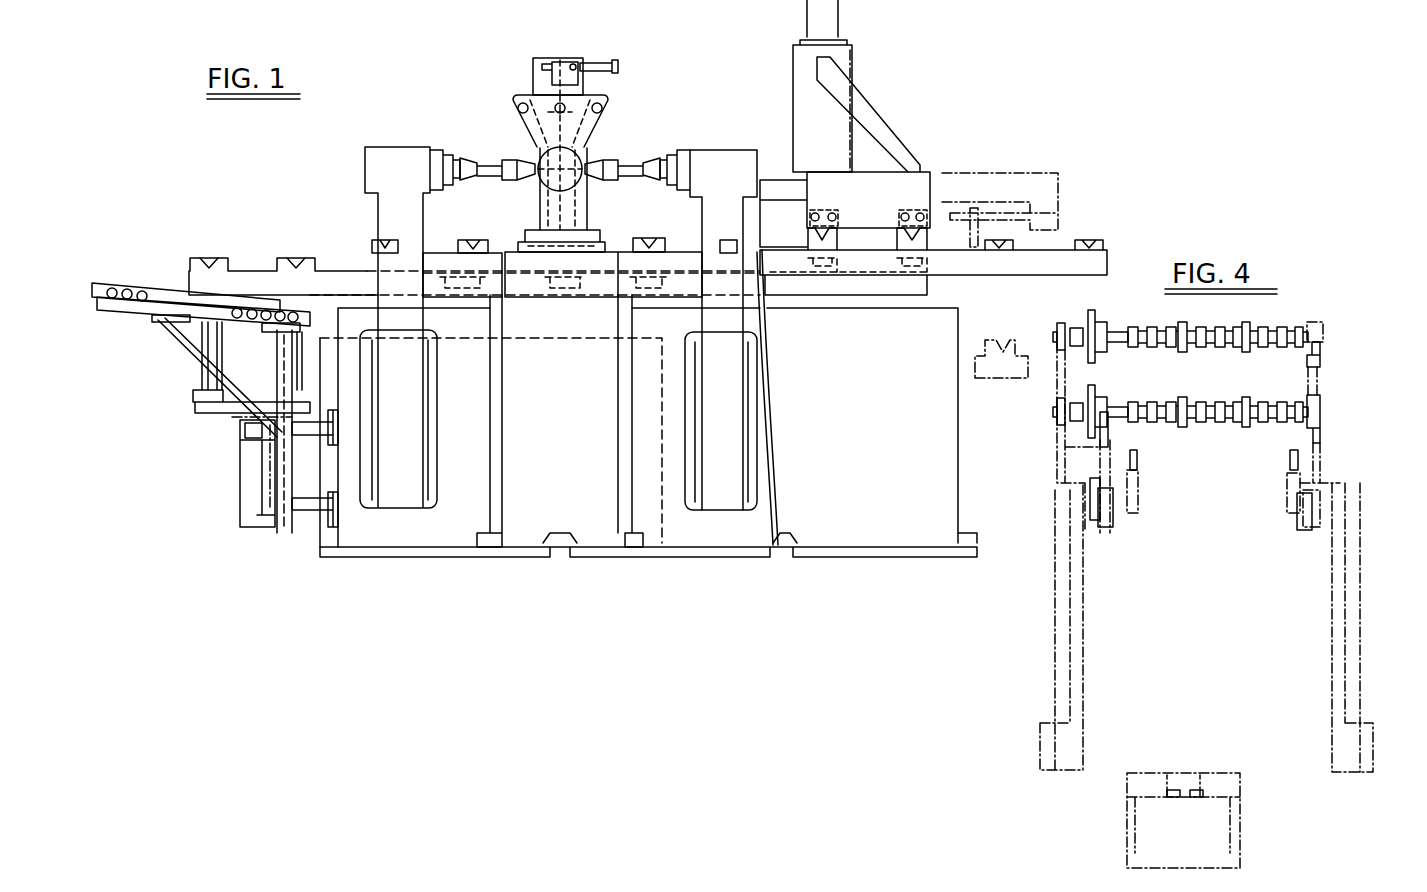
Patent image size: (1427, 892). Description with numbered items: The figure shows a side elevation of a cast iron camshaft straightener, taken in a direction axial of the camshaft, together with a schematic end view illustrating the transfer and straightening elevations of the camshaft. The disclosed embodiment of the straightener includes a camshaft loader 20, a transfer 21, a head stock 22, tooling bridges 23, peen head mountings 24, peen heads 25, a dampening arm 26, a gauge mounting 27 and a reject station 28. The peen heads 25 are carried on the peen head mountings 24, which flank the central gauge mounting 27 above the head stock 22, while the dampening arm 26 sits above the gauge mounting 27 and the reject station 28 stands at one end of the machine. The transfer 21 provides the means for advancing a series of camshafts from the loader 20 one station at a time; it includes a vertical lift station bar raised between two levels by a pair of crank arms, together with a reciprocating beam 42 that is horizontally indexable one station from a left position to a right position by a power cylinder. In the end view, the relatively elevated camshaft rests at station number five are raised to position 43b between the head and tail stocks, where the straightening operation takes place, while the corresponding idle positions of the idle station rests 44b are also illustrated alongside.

In FIG. 1, the camshaft loader 20 is at (252, 537).
In FIG. 1, the transfer 21 is at (340, 268).
In FIG. 1, the head stock 22 is at (518, 244).
In FIG. 1, the tooling bridges 23 is at (393, 495).
In FIG. 1, the peen head mountings 24 is at (433, 147).
In FIG. 1, the peen heads 25 is at (505, 160).
In FIG. 1, the dampening arm 26 is at (563, 55).
In FIG. 1, the gauge mounting 27 is at (597, 138).
In FIG. 1, the reject station 28 is at (863, 93).
In FIG. 4, the reciprocating beam 42 is at (1137, 467).
In FIG. 4, the raised position of elevated camshaft rests 43b is at (1055, 341).
In FIG. 4, the idle station rests 44b is at (1053, 406).